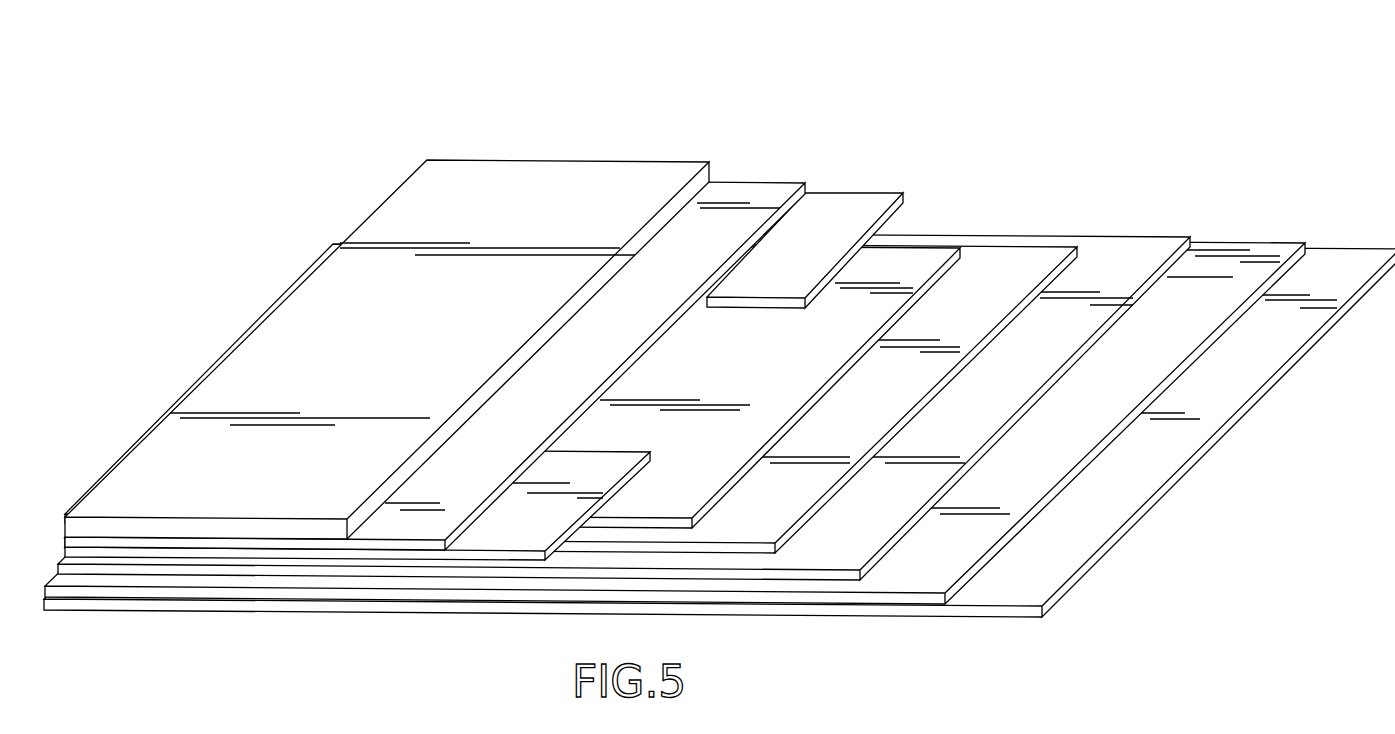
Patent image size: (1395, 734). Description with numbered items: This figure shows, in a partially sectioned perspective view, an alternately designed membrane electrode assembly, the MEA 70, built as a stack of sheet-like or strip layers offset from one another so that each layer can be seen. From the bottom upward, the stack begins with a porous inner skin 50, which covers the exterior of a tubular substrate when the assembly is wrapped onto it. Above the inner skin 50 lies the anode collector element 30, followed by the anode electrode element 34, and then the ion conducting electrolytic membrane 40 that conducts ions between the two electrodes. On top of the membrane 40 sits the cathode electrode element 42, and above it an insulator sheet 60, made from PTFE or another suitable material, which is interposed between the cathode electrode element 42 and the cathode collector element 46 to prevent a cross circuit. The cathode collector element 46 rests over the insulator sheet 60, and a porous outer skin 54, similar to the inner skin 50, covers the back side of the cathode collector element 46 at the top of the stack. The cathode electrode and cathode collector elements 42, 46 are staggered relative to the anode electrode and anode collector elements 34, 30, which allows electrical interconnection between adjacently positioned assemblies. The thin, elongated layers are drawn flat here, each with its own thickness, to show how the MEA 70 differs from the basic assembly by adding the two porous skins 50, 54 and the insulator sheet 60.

The MEA 70 is at (719, 347).
The porous outer skin 54 is at (263, 348).
The cathode collector element 46 is at (423, 545).
The insulator sheet 60 is at (550, 563).
The cathode electrode element 42 is at (660, 532).
The ion conducting electrolytic membrane 40 is at (743, 548).
The anode electrode element 34 is at (845, 580).
The anode collector element 30 is at (917, 598).
The porous inner skin 50 is at (1017, 610).